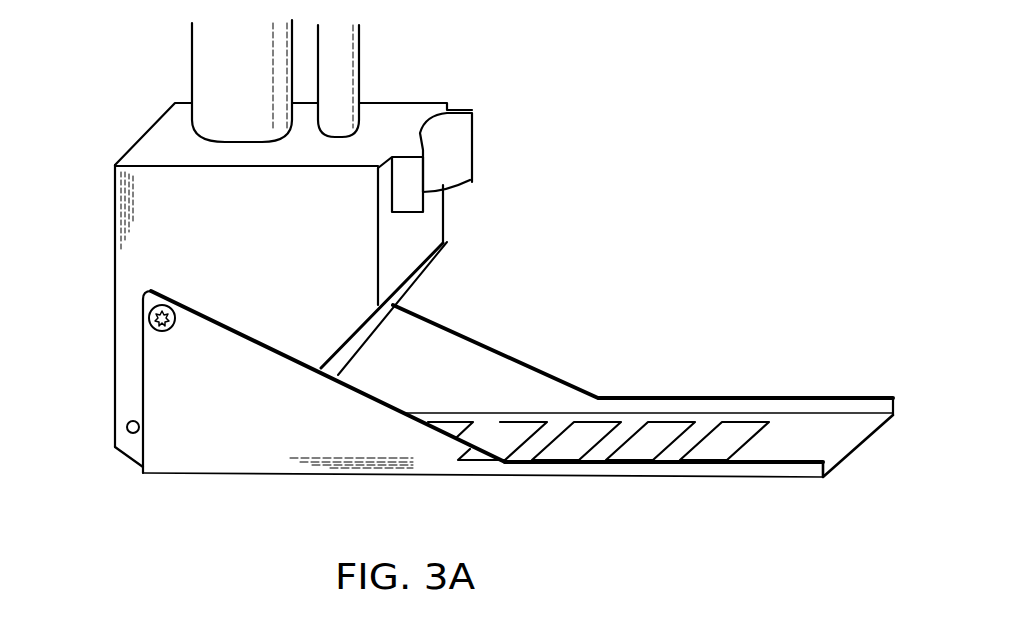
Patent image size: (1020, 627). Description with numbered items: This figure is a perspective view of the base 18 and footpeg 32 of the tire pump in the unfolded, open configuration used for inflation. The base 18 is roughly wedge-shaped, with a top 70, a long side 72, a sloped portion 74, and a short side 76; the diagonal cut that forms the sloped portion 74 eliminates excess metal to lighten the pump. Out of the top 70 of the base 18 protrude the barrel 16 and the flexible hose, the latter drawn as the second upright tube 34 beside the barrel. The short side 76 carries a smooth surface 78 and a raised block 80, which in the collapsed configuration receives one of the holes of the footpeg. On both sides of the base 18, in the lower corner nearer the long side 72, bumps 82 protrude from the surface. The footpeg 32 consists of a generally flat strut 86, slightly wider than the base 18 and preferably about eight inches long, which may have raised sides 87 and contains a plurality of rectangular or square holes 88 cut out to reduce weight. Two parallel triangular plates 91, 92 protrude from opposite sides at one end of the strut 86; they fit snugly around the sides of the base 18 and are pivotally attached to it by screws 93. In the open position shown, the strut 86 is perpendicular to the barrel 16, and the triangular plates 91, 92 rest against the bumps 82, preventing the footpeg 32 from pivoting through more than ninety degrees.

The barrel 16 is at (203, 48).
The second tube 34 is at (350, 45).
The top 70 is at (152, 145).
The long side 72 is at (115, 213).
The base 18 is at (552, 213).
The raised block 80 is at (458, 110).
The short side 76 is at (457, 200).
The smooth surface 78 is at (425, 228).
The sloped portion 74 is at (408, 285).
The triangular plate 92 is at (468, 353).
The footpeg 32 is at (672, 362).
The raised sides 87 is at (810, 407).
The strut 86 is at (842, 447).
The holes 88 is at (702, 450).
The triangular plate 91 is at (262, 468).
The screws 93 is at (162, 331).
The bumps 82 is at (127, 428).